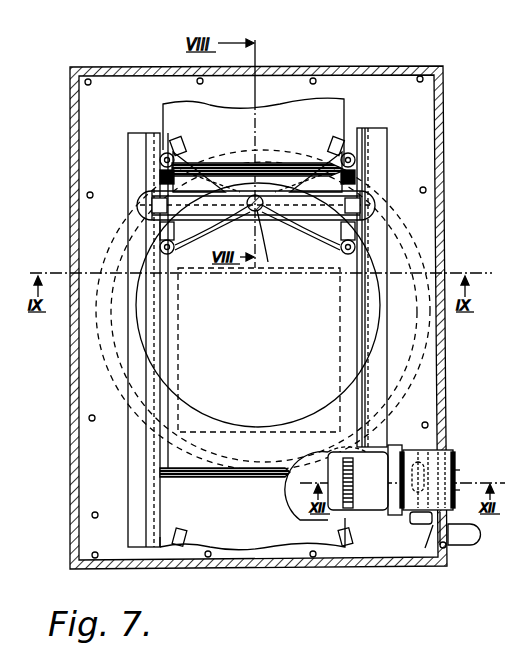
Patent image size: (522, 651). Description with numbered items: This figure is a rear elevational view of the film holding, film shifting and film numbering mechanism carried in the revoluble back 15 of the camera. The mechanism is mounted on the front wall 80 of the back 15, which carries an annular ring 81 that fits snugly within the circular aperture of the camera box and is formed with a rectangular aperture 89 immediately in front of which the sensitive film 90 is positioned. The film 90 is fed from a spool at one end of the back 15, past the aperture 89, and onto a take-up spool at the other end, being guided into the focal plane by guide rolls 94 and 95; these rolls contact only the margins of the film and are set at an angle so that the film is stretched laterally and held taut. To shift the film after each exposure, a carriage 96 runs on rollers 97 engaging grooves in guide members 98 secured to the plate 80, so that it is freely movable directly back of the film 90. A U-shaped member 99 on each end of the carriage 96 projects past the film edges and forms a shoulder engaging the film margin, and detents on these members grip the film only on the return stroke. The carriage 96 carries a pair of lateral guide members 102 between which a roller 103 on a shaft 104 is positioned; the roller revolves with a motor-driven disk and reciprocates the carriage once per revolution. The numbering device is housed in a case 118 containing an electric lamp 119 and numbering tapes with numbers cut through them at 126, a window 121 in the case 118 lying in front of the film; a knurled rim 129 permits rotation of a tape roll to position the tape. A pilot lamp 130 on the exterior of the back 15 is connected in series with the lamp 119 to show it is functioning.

The revoluble back 15 is at (442, 66).
The front wall 80 is at (413, 105).
The annular ring 81 is at (436, 218).
The aperture 89 is at (340, 330).
The sensitive film 90 is at (261, 548).
The guide rolls 94 is at (182, 145).
The guide rolls 95 is at (186, 536).
The carriage 96 is at (291, 224).
The rollers 97 is at (352, 158).
The guide members 98 is at (130, 448).
The U-shaped member 99 is at (142, 206).
The lateral guide members 102 is at (221, 175).
The roller 103 is at (258, 197).
The shaft 104 is at (277, 241).
The case 118 is at (449, 455).
The electric lamp 119 is at (420, 458).
The window 121 is at (330, 458).
The numbers cut through tape 126 is at (364, 492).
The knurled rim 129 is at (458, 490).
The pilot lamp 130 is at (466, 545).